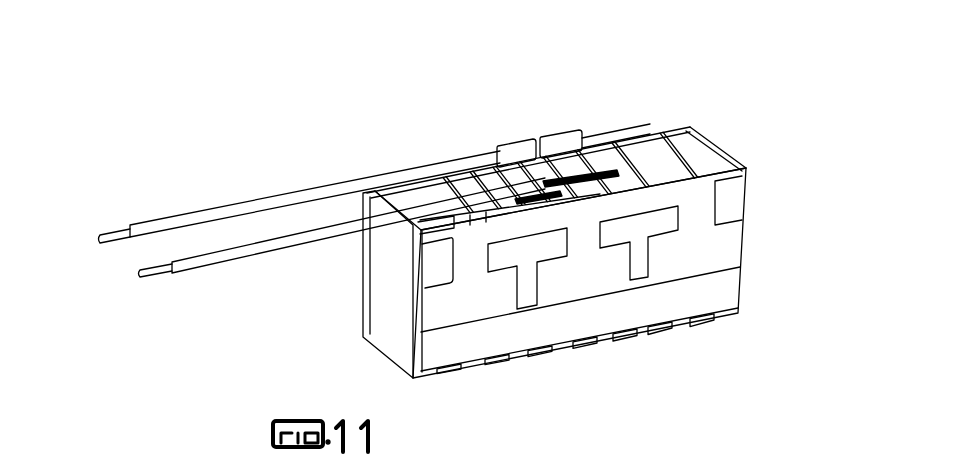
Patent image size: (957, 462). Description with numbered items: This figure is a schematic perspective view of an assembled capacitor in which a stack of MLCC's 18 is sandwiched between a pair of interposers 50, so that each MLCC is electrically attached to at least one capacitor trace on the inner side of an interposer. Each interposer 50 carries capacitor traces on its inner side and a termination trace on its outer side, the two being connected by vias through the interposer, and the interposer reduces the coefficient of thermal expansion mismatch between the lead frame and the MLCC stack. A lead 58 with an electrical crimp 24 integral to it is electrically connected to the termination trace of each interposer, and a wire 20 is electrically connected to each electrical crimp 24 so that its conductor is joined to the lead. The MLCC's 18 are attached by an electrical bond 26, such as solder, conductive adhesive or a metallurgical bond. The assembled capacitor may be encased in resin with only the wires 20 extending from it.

The MLCC 18 is at (424, 198).
The wire 20 is at (245, 253).
The electrical crimp 24 is at (606, 170).
The electrical bond 26 is at (661, 130).
The interposer 50 is at (700, 303).
The lead 58 is at (731, 250).